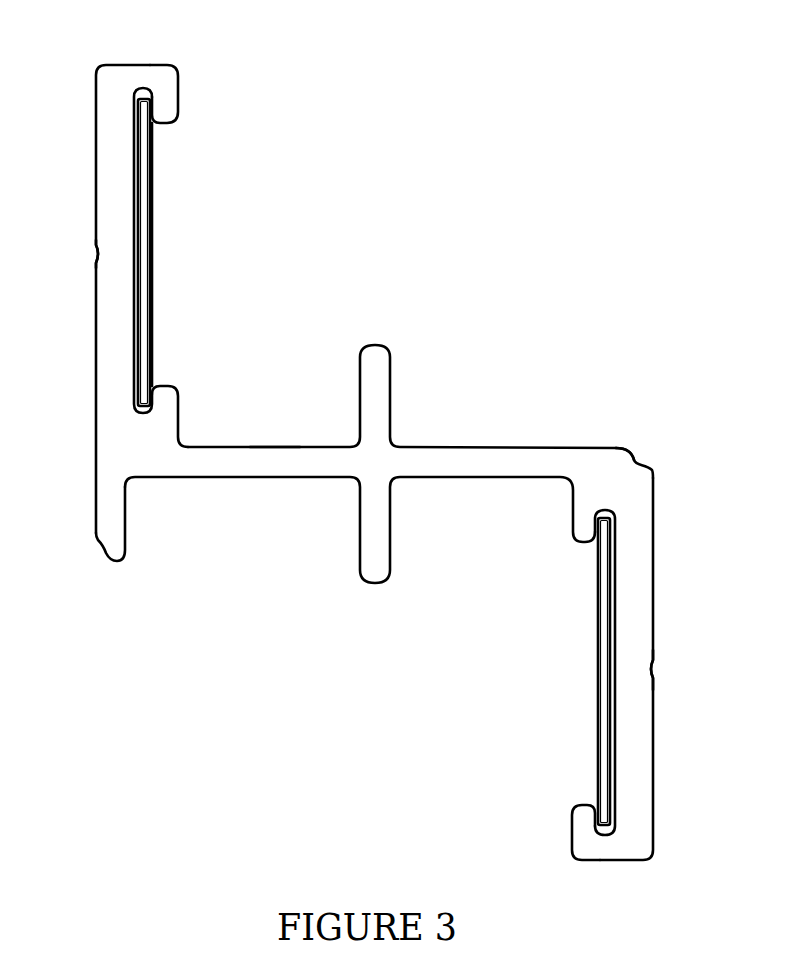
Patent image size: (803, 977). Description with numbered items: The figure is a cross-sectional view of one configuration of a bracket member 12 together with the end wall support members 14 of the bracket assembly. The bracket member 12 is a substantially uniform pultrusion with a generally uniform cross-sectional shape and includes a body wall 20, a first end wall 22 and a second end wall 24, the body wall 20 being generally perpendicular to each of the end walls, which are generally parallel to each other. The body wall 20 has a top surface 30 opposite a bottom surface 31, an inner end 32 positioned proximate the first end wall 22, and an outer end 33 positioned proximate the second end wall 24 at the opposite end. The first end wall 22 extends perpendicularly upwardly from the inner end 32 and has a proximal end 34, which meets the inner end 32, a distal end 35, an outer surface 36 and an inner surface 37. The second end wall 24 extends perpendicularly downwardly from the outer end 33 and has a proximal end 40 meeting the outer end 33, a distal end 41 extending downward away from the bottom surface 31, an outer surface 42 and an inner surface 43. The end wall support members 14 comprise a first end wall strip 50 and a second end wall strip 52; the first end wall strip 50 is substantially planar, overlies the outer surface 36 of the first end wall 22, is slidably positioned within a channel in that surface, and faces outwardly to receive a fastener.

The bracket member 12 is at (370, 466).
The end wall support members 14 is at (174, 348).
The body wall 20 is at (499, 433).
The first end wall 22 is at (70, 370).
The second end wall 24 is at (670, 671).
The top surface 30 is at (272, 447).
The bottom surface 31 is at (246, 478).
The inner end 32 is at (188, 442).
The outer end 33 is at (643, 428).
The proximal end 34 is at (96, 470).
The distal end 35 is at (176, 71).
The outer surface 36 is at (184, 272).
The inner surface 37 is at (82, 253).
The proximal end 40 is at (657, 475).
The distal end 41 is at (655, 860).
The outer surface 42 is at (655, 768).
The inner surface 43 is at (561, 745).
The first end wall strip 50 is at (154, 212).
The second end wall strip 52 is at (581, 670).